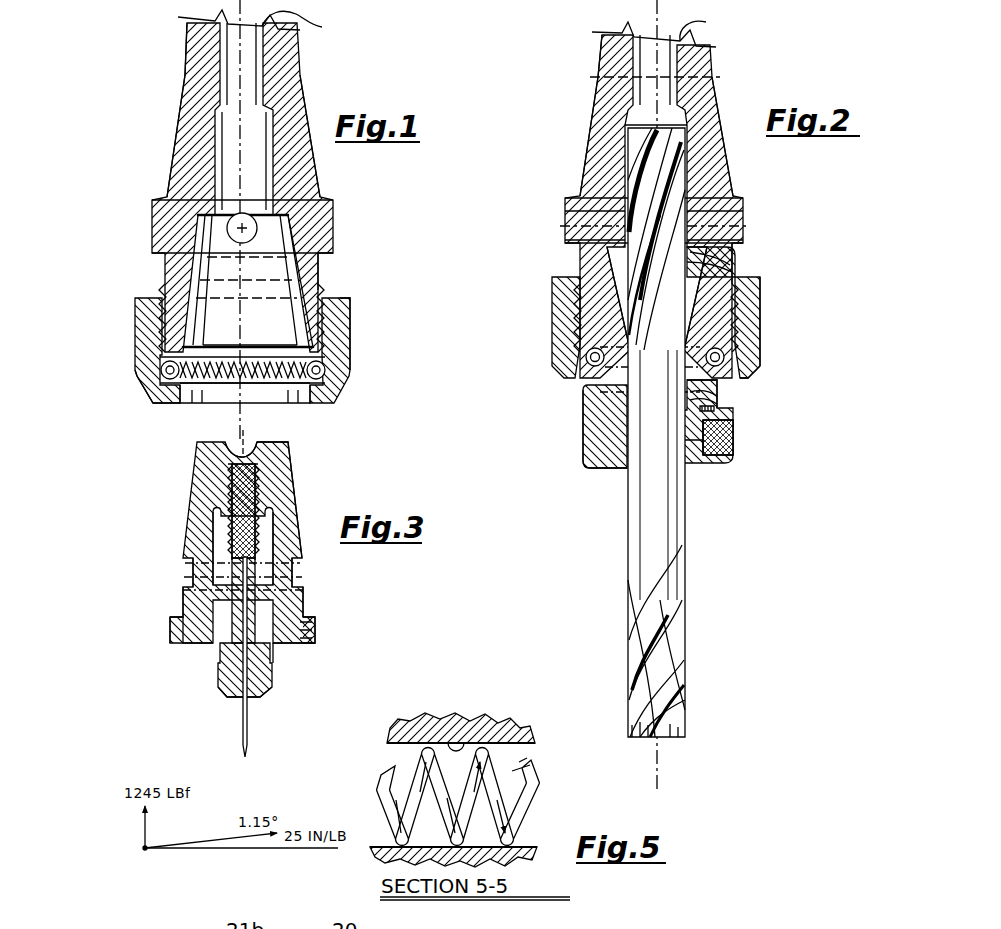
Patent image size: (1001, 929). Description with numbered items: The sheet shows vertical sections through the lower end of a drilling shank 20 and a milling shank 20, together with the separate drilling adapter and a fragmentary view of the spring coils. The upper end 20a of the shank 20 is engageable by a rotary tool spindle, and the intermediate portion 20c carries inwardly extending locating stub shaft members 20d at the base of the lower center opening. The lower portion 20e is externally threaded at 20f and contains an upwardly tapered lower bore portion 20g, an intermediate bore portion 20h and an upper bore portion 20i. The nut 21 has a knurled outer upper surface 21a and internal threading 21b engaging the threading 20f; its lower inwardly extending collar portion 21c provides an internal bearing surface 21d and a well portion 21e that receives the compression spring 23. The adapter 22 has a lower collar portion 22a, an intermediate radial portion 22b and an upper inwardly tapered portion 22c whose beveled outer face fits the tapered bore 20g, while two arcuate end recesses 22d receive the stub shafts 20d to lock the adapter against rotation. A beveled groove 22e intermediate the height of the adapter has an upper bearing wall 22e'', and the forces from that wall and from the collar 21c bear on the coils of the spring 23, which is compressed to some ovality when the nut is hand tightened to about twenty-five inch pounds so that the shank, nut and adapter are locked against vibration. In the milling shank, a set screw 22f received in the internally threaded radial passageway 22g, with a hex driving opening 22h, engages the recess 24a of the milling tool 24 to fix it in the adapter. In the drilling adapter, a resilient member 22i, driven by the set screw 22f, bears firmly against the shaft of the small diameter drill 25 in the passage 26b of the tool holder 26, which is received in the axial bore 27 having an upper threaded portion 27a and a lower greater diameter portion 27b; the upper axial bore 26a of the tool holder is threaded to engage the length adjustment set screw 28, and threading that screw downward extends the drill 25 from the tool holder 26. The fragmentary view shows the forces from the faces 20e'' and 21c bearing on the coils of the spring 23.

In FIG. 1, the shank 20 is at (185, 45).
In FIG. 2, the shank 20 is at (600, 47).
In FIG. 1, the upper end of shank 20a is at (186, 49).
In FIG. 2, the upper end of shank 20a is at (600, 56).
In FIG. 1, the intermediate portion of shank 20c is at (180, 130).
In FIG. 2, the intermediate portion of shank 20c is at (597, 125).
In FIG. 1, the locating stub shaft members 20d is at (198, 232).
In FIG. 2, the locating stub shaft members 20d is at (575, 230).
In FIG. 1, the lower portion of shank 20e is at (363, 262).
In FIG. 2, the lower portion of shank 20e is at (597, 298).
In FIG. 5, the upper bearing wall of groove 20e'' is at (461, 717).
In FIG. 1, the external threading 20f is at (160, 295).
In FIG. 2, the external threading 20f is at (578, 300).
In FIG. 1, the upwardly tapered lower bore portion 20g is at (318, 280).
In FIG. 2, the upwardly tapered lower bore portion 20g is at (705, 276).
In FIG. 1, the intermediate bore portion 20h is at (300, 97).
In FIG. 2, the intermediate bore portion 20h is at (700, 175).
In FIG. 1, the upper bore portion 20i is at (322, 27).
In FIG. 2, the upper bore portion 20i is at (692, 24).
In FIG. 1, the nut 21 is at (135, 328).
In FIG. 2, the nut 21 is at (552, 320).
In FIG. 1, the outer upper uniform radius surface of nut 21a is at (345, 318).
In FIG. 1, the internal threading of nut 21b is at (350, 340).
In FIG. 2, the internal threading of nut 21b is at (760, 330).
In FIG. 5, the lower inwardly extending collar portion of nut 21c is at (385, 847).
In FIG. 1, the internal bearing surface 21d is at (252, 402).
In FIG. 1, the well portion 21e is at (150, 386).
In FIG. 2, the well portion 21e is at (738, 356).
In FIG. 3, the adapter 22 is at (195, 494).
In FIG. 2, the adapter 22 is at (583, 432).
In FIG. 3, the lower collar portion of adapter 22a is at (172, 628).
In FIG. 2, the lower collar portion of adapter 22a is at (592, 460).
In FIG. 3, the intermediate radial portion of adapter 22b is at (182, 607).
In FIG. 2, the intermediate radial portion of adapter 22b is at (583, 416).
In FIG. 3, the upper inwardly tapered portion of adapter 22c is at (280, 445).
In FIG. 2, the upper inwardly tapered portion of adapter 22c is at (732, 265).
In FIG. 3, the arcuate end recesses 22d is at (260, 446).
In FIG. 2, the arcuate end recesses 22d is at (728, 250).
In FIG. 3, the beveled groove 22e is at (342, 600).
In FIG. 2, the beveled groove 22e is at (757, 394).
In FIG. 3, the upper bearing wall of groove 22e'' is at (238, 567).
In FIG. 3, the set screw 22f is at (290, 648).
In FIG. 2, the set screw 22f is at (702, 452).
In FIG. 2, the internally threaded radial passageway 22g is at (735, 445).
In FIG. 3, the hex opening driving portion 22h is at (315, 626).
In FIG. 2, the hex opening driving portion 22h is at (735, 410).
In FIG. 3, the resilient member 22i is at (275, 672).
In FIG. 1, the compression spring 23 is at (205, 396).
In FIG. 2, the compression spring 23 is at (585, 362).
In FIG. 5, the compression spring 23 is at (540, 797).
In FIG. 2, the milling tool 24 is at (688, 524).
In FIG. 2, the recess in tool 24a is at (672, 440).
In FIG. 3, the drill 25 is at (250, 730).
In FIG. 3, the tool holder 26 is at (218, 656).
In FIG. 3, the upper axial bore of tool holder 26a is at (200, 603).
In FIG. 3, the lower bore of tool holder 26b is at (236, 690).
In FIG. 3, the axial bore 27 is at (258, 508).
In FIG. 3, the upper threaded portion of axial bore 27a is at (258, 488).
In FIG. 3, the lower greater diameter portion of axial bore 27b is at (268, 530).
In FIG. 3, the length adjustment set screw 28 is at (228, 486).